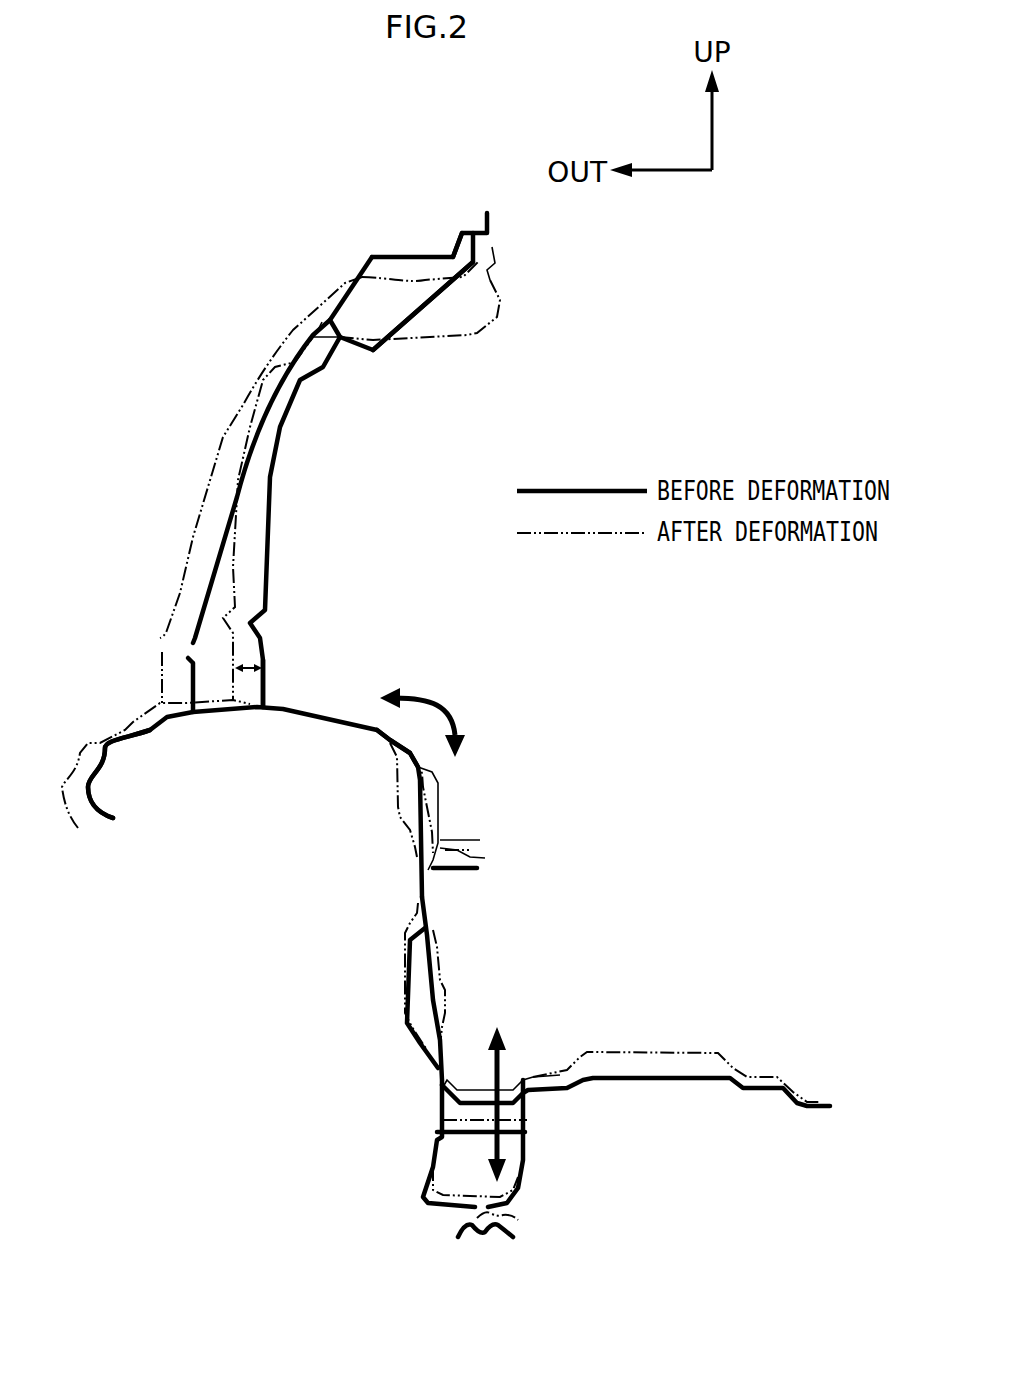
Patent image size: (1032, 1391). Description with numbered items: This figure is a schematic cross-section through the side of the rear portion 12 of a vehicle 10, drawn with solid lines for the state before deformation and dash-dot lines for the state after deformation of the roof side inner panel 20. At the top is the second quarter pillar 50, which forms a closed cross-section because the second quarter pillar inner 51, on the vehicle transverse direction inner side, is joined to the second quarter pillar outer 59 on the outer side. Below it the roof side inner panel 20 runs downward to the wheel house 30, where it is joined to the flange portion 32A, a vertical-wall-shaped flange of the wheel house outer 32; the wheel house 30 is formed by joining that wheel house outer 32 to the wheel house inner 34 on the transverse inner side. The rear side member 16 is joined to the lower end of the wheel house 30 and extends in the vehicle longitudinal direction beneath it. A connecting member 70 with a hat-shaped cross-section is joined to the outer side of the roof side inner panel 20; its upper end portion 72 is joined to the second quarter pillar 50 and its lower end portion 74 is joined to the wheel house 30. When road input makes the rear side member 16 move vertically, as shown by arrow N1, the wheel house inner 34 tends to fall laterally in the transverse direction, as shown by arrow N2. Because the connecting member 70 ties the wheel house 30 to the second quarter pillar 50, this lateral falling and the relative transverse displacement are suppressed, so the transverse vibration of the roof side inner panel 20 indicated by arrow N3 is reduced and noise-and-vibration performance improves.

The vehicle 10 is at (625, 287).
The rear portion 12 is at (625, 363).
The rear side member 16 is at (528, 1150).
The roof side inner panel 20 is at (270, 508).
The wheel house 30 is at (323, 715).
The wheel house outer 32 is at (135, 738).
The flange portion 32A is at (263, 655).
The wheel house inner 34 is at (362, 730).
The second quarter pillar 50 is at (414, 241).
The second quarter pillar inner 51 is at (437, 297).
The second quarter pillar outer 59 is at (435, 250).
The connecting member 70 is at (218, 452).
The upper end portion 72 is at (322, 322).
The lower end portion 74 is at (190, 695).
The arrow N1 is at (500, 1063).
The arrow N2 is at (437, 698).
The arrow N3 is at (247, 675).